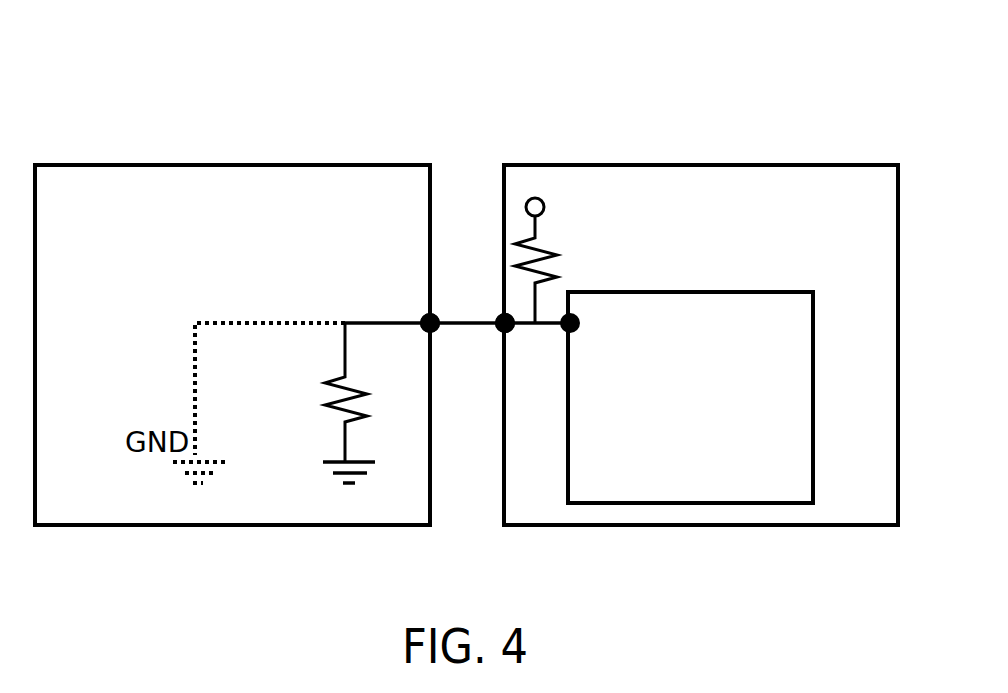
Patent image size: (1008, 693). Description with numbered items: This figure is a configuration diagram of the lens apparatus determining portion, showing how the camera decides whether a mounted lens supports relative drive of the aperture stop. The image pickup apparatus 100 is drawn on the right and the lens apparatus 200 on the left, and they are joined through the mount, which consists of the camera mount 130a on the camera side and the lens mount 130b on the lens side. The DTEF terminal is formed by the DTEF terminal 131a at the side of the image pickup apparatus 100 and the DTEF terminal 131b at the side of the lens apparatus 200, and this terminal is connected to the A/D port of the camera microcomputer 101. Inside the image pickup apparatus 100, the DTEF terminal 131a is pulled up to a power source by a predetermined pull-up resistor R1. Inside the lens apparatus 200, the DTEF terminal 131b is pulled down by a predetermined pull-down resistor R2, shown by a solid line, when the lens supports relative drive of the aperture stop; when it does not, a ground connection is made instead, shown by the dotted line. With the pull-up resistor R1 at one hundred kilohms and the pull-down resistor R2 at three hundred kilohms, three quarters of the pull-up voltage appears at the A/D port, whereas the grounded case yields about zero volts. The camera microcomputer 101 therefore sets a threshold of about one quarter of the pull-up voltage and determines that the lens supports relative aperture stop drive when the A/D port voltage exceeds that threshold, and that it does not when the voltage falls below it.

The image pickup apparatus 100 is at (721, 165).
The lens apparatus 200 is at (311, 165).
The camera microcomputer 101 is at (690, 397).
The camera mount 130a is at (503, 498).
The lens mount 130b is at (430, 478).
The DTEF terminal 131a is at (495, 330).
The DTEF terminal 131b is at (440, 318).
The pull-up resistor R1 is at (556, 247).
The pull-down resistor R2 is at (327, 403).